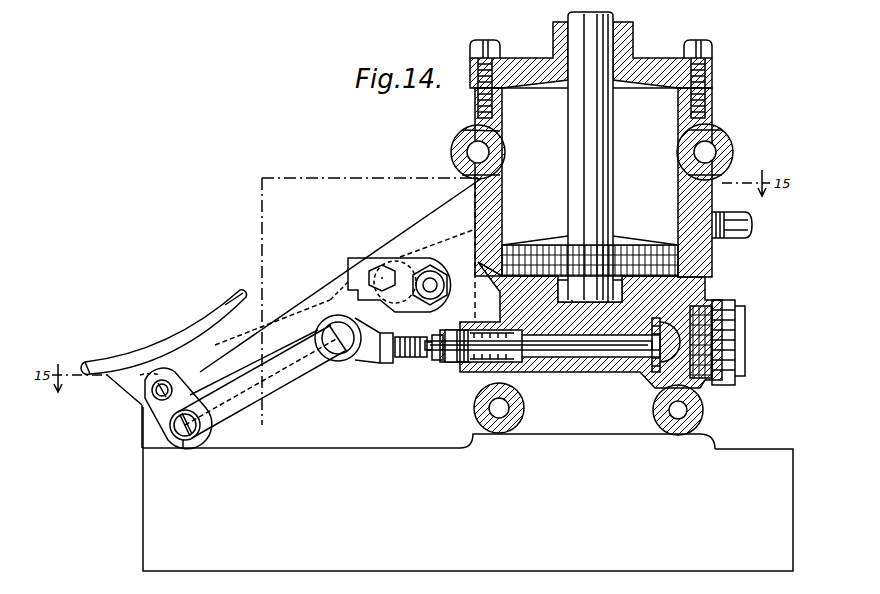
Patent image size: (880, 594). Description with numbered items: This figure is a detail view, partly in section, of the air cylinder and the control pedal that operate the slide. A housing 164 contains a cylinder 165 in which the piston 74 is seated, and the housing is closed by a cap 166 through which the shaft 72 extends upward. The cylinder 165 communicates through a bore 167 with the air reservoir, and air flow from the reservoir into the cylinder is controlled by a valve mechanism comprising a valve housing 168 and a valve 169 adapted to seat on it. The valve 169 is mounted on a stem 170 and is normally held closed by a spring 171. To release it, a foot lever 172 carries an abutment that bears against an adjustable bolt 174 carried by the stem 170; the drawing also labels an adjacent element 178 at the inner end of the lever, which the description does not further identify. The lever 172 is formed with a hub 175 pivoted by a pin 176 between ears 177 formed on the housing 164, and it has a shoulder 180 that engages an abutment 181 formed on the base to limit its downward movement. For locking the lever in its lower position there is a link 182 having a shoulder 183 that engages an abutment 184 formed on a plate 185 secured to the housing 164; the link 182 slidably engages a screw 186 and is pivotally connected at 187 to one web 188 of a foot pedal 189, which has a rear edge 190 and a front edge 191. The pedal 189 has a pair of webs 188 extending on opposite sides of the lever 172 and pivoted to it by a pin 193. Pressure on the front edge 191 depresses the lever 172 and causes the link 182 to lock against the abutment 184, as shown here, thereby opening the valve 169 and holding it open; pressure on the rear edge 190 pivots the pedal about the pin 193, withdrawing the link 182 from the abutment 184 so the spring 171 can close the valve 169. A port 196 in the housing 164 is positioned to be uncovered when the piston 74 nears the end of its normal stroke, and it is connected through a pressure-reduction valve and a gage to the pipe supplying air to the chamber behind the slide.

The shaft 72 is at (603, 160).
The piston 74 is at (520, 256).
The housing 164 is at (712, 276).
The cylinder 165 is at (670, 140).
The cap 166 is at (624, 64).
The bore 167 is at (673, 338).
The valve housing 168 is at (590, 378).
The valve 169 is at (652, 386).
The stem 170 is at (607, 345).
The spring 171 is at (490, 368).
The foot lever 172 is at (282, 320).
The adjustable bolt 174 is at (400, 362).
The hub 175 is at (431, 277).
The pin 176 is at (394, 262).
The ears 177 is at (441, 206).
The block 178 is at (383, 362).
The shoulder 180 is at (143, 447).
The abutment 181 is at (145, 468).
The link 182 is at (258, 398).
The shoulder 183 is at (398, 358).
The abutment 184 is at (352, 280).
The plate 185 is at (355, 256).
The screw 186 is at (334, 360).
The pivotal connection 187 is at (190, 442).
The web 188 is at (130, 382).
The foot pedal 189 is at (156, 352).
The rear edge 190 is at (237, 293).
The front edge 191 is at (86, 363).
The pin 193 is at (174, 390).
The port 196 is at (714, 223).